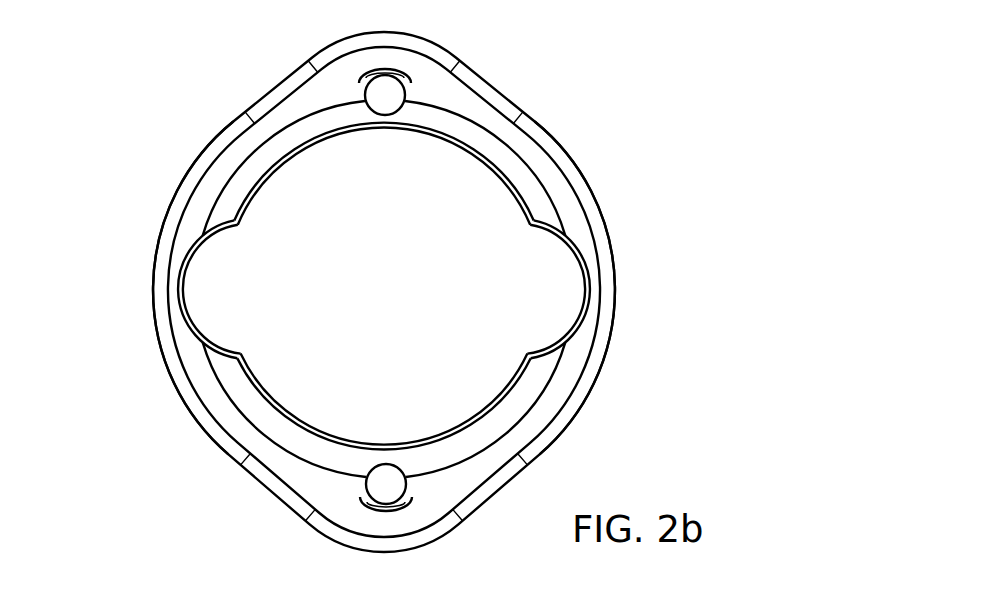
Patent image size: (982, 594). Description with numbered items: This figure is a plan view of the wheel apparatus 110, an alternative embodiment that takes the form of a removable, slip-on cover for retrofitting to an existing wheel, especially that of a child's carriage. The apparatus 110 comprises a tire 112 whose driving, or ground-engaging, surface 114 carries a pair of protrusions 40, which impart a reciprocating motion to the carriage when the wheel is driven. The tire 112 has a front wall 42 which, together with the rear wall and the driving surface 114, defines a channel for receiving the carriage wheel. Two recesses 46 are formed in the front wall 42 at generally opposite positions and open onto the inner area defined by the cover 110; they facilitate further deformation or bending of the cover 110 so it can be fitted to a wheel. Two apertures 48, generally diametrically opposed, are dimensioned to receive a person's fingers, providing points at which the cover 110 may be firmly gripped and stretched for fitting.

The protrusions 40 is at (438, 52).
The front wall 42 is at (228, 178).
The recesses 46 is at (231, 287).
The apertures 48 is at (385, 100).
The wheel apparatus 110 is at (421, 299).
The tire 112 is at (621, 365).
The driving surface 114 is at (172, 392).